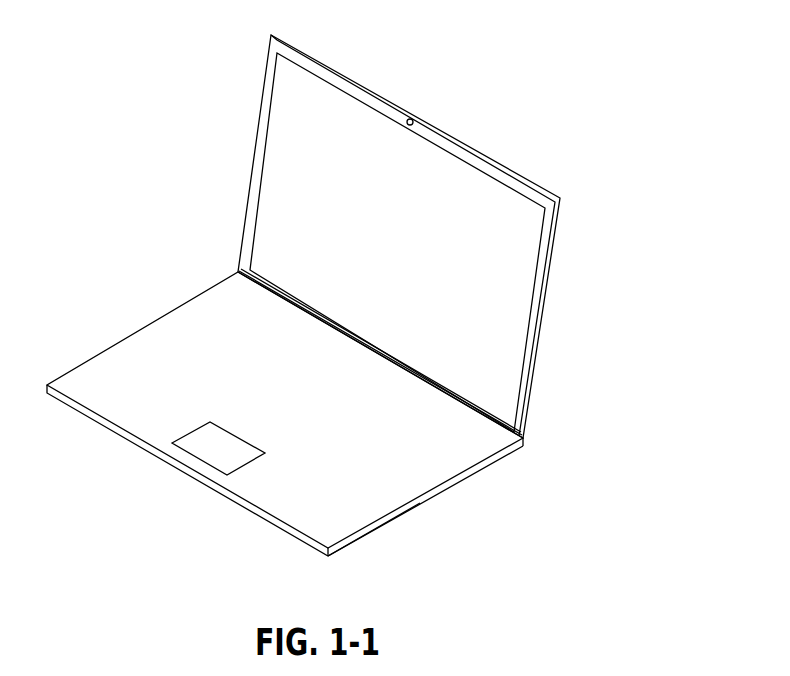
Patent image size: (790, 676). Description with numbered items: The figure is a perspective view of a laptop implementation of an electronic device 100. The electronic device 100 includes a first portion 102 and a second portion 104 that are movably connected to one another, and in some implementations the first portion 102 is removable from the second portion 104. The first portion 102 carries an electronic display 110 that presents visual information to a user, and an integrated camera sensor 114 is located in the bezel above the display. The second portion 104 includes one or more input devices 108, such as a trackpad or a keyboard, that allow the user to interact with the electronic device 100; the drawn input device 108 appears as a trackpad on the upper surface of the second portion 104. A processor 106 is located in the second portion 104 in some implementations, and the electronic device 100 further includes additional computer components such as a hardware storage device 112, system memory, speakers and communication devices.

The electronic device 100 is at (607, 55).
The first portion 102 is at (522, 240).
The second portion 104 is at (437, 491).
The processor 106 is at (340, 523).
The input device 108 is at (212, 458).
The electronic display 110 is at (522, 290).
The hardware storage device 112 is at (524, 438).
The camera sensor 114 is at (411, 118).